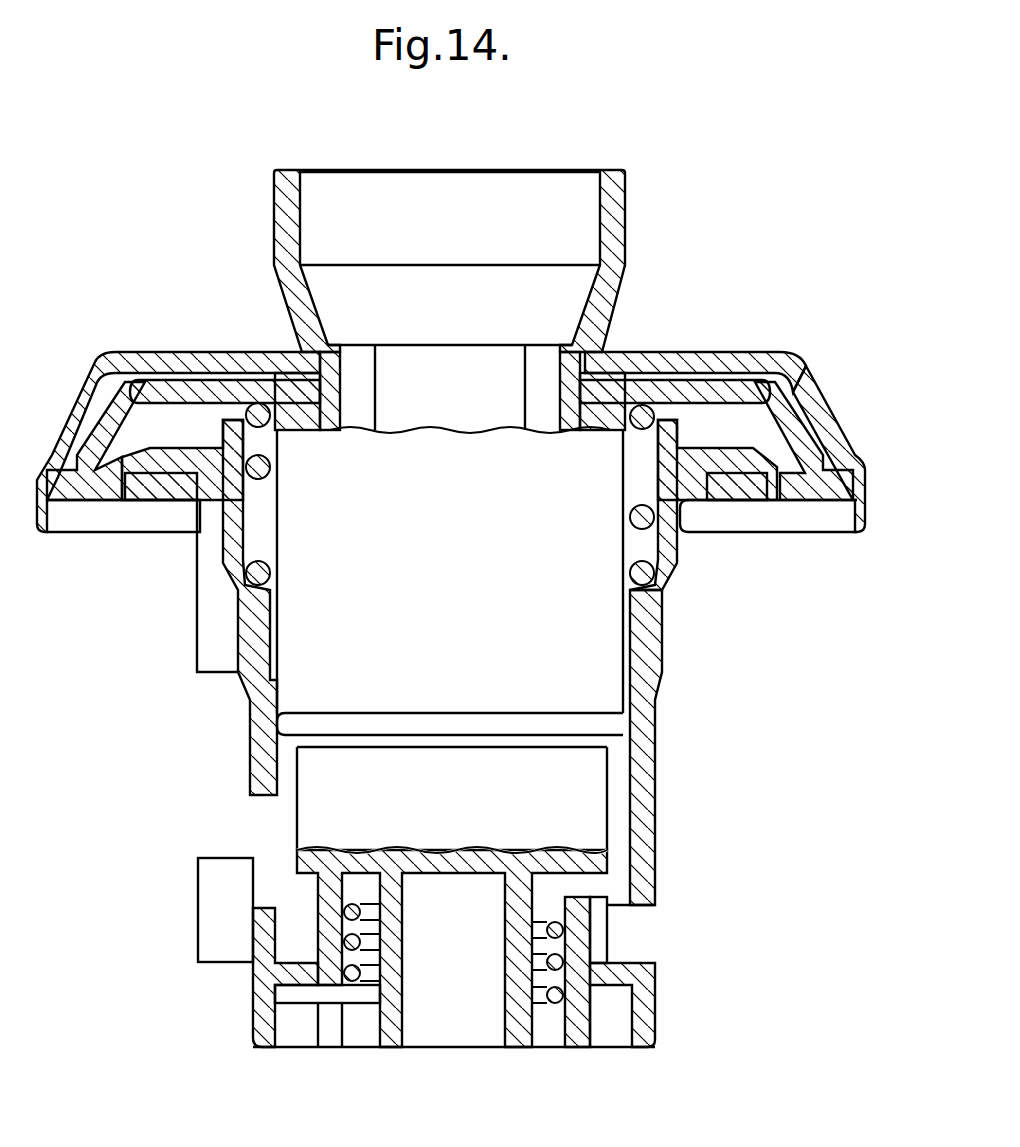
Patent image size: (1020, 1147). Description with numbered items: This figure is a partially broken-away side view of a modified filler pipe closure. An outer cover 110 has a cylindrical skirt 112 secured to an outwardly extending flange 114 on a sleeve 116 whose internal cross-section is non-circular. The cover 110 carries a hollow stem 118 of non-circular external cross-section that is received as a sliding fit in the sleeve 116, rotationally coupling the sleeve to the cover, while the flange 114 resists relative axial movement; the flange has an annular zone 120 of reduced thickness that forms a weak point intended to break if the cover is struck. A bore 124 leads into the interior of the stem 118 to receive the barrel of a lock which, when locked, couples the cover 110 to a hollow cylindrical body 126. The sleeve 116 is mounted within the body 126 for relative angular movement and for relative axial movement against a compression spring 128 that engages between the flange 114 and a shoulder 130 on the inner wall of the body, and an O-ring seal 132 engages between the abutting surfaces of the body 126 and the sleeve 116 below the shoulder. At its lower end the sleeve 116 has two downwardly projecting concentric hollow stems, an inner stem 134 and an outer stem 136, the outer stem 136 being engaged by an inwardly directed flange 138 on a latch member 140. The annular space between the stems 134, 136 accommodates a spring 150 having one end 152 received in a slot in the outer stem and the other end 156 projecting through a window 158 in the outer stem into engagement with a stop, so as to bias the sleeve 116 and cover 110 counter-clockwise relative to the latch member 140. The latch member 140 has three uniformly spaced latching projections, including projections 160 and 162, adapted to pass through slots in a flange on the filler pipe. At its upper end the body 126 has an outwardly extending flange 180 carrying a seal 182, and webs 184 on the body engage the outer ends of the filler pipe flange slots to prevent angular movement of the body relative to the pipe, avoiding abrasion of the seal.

The outer cover 110 is at (686, 362).
The cylindrical skirt 112 is at (833, 450).
The outwardly extending flange 114 is at (763, 388).
The sleeve 116 is at (605, 655).
The hollow stem 118 is at (586, 385).
The annular zone 120 is at (243, 395).
The bore 124 is at (435, 205).
The hollow cylindrical body 126 is at (656, 762).
The compression spring 128 is at (270, 478).
The shoulder 130 is at (660, 588).
The O-ring seal 132 is at (512, 720).
The inner stem 134 is at (390, 1030).
The outer stem 136 is at (578, 1035).
The inwardly directed flange 138 is at (613, 973).
The latch member 140 is at (662, 1031).
The spring 150 is at (540, 1000).
The spring end 152 is at (550, 912).
The spring end 156 is at (295, 1000).
The window 158 is at (330, 1027).
The latching projection 160 is at (213, 920).
The latching projection 162 is at (600, 932).
The outwardly extending flange 180 is at (165, 470).
The seal 182 is at (765, 490).
The web 184 is at (222, 655).